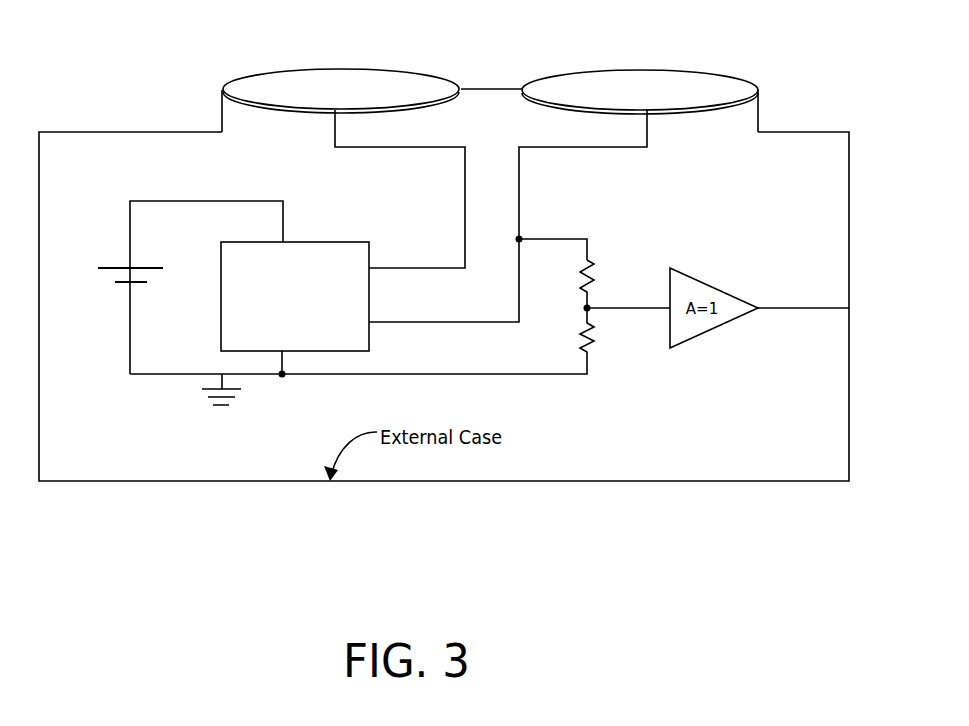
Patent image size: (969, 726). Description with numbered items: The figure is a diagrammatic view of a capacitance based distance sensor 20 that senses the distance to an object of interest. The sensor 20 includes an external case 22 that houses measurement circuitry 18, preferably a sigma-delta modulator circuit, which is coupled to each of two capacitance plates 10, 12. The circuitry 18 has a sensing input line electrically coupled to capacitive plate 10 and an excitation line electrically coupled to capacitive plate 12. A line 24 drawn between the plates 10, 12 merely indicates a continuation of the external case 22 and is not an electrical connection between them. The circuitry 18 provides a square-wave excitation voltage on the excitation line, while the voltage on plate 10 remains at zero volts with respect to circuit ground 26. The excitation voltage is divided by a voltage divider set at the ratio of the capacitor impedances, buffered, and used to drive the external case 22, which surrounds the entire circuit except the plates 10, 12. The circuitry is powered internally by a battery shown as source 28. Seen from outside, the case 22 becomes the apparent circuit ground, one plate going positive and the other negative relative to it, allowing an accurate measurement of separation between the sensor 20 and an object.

The capacitance plate 10 is at (250, 107).
The capacitance plate 12 is at (730, 109).
The measurement circuitry 18 is at (221, 322).
The sensor 20 is at (552, 557).
The external case 22 is at (658, 482).
The line 24 is at (470, 88).
The circuit ground 26 is at (210, 384).
The source 28 is at (126, 284).